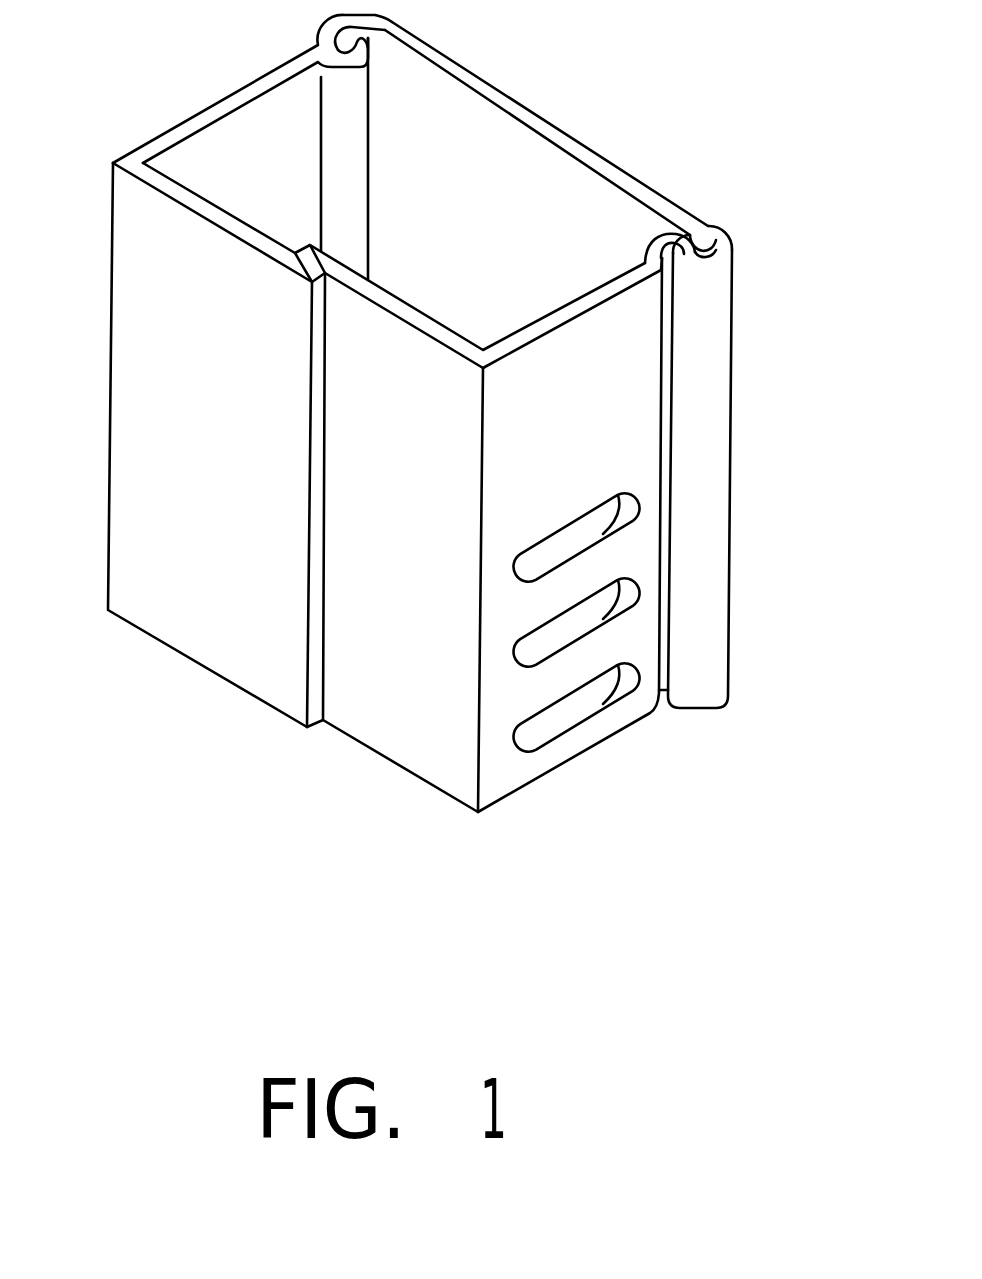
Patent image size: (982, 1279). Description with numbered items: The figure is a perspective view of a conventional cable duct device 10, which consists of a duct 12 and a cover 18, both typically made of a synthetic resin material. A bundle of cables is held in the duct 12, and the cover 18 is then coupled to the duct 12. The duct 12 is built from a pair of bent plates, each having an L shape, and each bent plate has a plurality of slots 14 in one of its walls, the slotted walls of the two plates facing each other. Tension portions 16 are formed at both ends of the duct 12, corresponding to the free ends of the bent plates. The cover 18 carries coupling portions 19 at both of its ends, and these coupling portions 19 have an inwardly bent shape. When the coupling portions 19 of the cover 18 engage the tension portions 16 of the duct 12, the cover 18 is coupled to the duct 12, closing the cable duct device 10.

The card holder assembly 10 is at (479, 475).
The duct 12 is at (257, 662).
The slots 14 is at (570, 692).
The tension portions 16 is at (693, 237).
The cover 18 is at (527, 183).
The coupling portions 19 is at (710, 458).